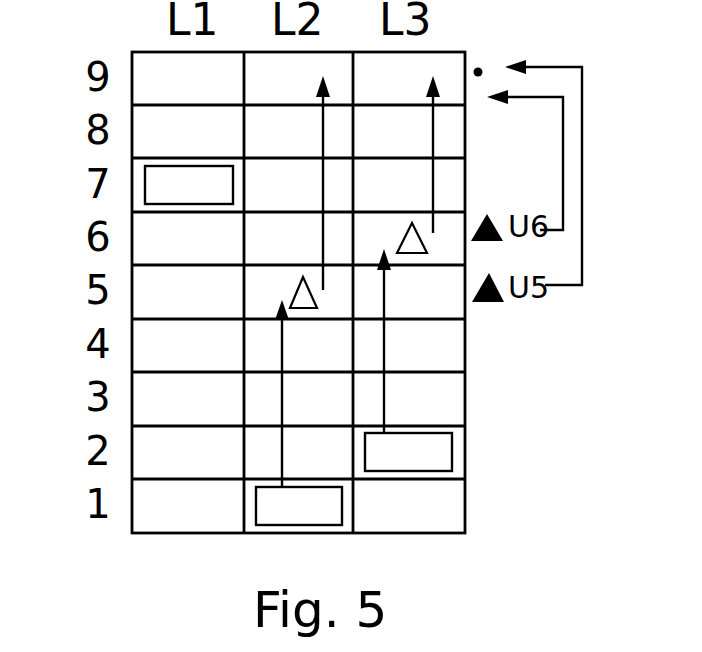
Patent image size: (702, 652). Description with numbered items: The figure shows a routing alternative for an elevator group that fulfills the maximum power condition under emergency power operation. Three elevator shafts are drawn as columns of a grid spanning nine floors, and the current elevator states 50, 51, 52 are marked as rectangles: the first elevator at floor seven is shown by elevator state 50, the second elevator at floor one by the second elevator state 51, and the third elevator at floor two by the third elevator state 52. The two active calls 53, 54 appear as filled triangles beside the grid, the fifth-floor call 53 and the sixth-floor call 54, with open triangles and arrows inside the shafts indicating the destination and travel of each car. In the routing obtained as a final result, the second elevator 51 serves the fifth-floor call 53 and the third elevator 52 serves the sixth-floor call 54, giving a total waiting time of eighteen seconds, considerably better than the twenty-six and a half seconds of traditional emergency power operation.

The elevator state 50 is at (145, 168).
The elevator L2 state 51 is at (303, 526).
The elevator L3 state 52 is at (452, 456).
The call U5 53 is at (484, 305).
The call U6 54 is at (490, 213).